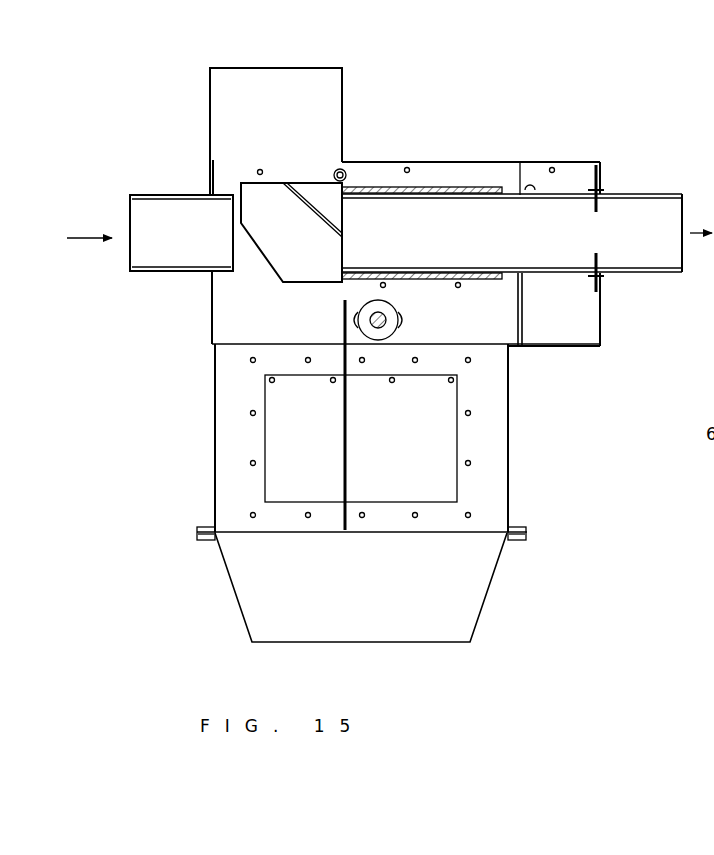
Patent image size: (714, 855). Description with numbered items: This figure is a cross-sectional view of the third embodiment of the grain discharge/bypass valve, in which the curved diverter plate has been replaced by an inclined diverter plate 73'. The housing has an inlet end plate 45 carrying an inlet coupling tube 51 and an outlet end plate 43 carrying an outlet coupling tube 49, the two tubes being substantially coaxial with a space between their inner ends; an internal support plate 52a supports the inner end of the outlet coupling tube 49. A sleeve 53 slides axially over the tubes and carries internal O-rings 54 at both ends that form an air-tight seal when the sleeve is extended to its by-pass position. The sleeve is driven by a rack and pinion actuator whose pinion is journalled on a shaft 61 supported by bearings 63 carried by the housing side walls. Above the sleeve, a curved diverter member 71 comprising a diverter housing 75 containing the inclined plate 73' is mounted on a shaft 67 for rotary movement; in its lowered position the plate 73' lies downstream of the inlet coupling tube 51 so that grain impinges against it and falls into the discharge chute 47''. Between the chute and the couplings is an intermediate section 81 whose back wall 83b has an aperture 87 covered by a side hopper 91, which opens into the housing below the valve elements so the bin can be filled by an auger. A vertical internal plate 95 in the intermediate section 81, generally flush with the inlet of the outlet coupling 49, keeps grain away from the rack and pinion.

The outlet end plate 43 is at (603, 308).
The inlet end plate 45 is at (210, 295).
The discharge chute 47'' is at (369, 584).
The outlet coupling tube 49 is at (627, 194).
The inlet coupling tube 51 is at (145, 272).
The internal support plate 52a is at (522, 320).
The sleeve 53 is at (441, 187).
The internal O-rings 54 is at (354, 187).
The shaft 61 is at (385, 316).
The bearings 63 is at (400, 331).
The shaft 67 is at (338, 170).
The curved diverter member 71 is at (298, 290).
The inclined plate 73' is at (228, 212).
The diverter housing 75 is at (268, 268).
The intermediate section 81 is at (512, 444).
The back wall 83b is at (490, 470).
The aperture 87 is at (390, 494).
The side hopper 91 is at (408, 468).
The vertical internal plate 95 is at (343, 510).